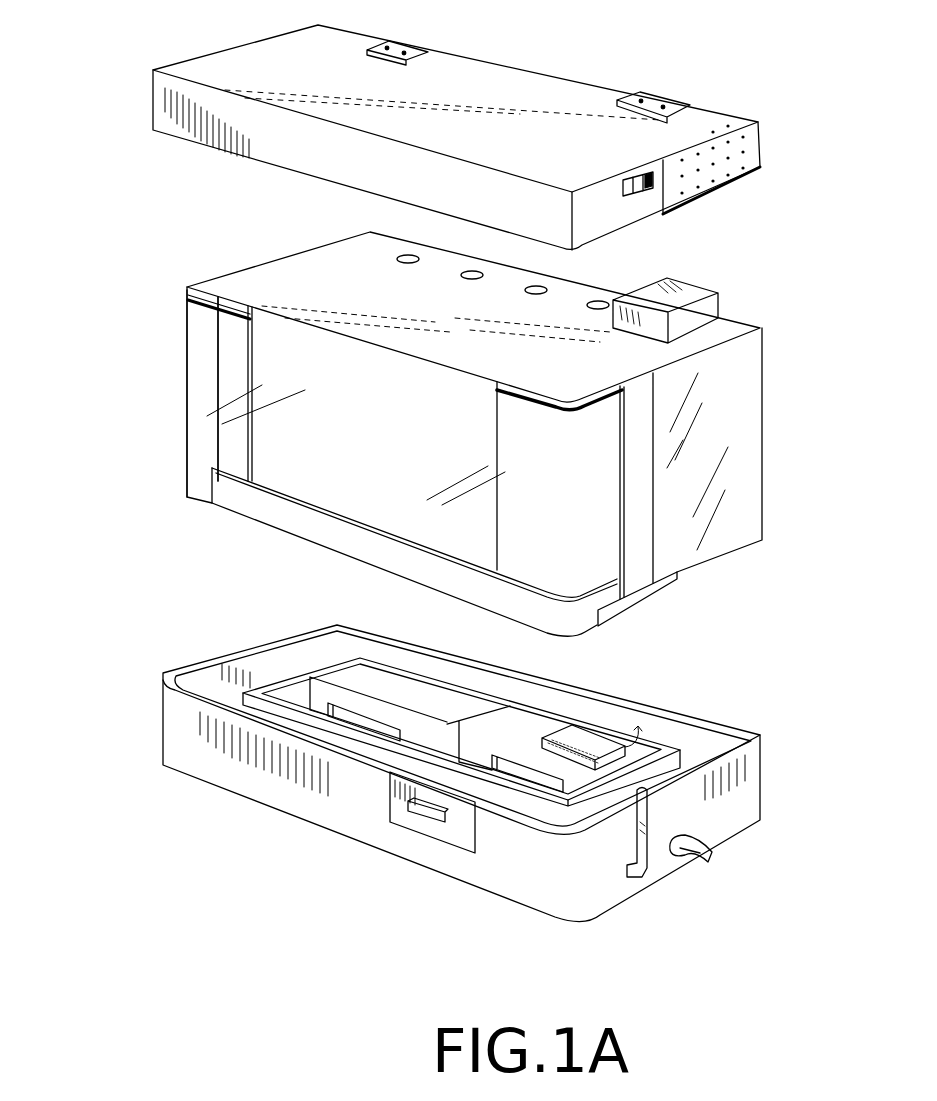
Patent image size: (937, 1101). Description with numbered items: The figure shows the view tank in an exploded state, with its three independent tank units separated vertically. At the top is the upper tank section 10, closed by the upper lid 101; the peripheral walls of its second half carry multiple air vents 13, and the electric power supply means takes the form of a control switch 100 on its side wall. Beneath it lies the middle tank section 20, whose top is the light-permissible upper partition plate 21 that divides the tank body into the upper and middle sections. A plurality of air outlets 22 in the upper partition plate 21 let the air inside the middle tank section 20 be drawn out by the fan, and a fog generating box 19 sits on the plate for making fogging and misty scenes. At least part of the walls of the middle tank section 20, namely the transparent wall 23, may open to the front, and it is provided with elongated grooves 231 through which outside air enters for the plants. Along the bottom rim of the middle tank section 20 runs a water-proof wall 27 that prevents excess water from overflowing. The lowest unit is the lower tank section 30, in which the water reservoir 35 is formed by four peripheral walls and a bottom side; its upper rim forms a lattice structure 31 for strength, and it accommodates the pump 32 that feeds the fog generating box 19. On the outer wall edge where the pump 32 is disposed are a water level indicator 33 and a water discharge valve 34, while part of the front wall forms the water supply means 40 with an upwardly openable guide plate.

The upper tank section 10 is at (160, 51).
The upper lid 101 is at (712, 125).
The air vents 13 is at (745, 163).
The control switch 100 is at (626, 184).
The middle tank section 20 is at (154, 368).
The upper partition plate 21 is at (308, 260).
The air outlets 22 is at (597, 301).
The fog generating box 19 is at (680, 293).
The elongated grooves 231 is at (186, 297).
The wall 23 is at (192, 412).
The water-proof wall 27 is at (410, 553).
The lower tank section 30 is at (152, 707).
The water reservoir 35 is at (338, 666).
The lattice structure 31 is at (472, 745).
The pump 32 is at (584, 736).
The water level indicator 33 is at (643, 818).
The water discharge valve 34 is at (707, 862).
The water supply means 40 is at (408, 834).